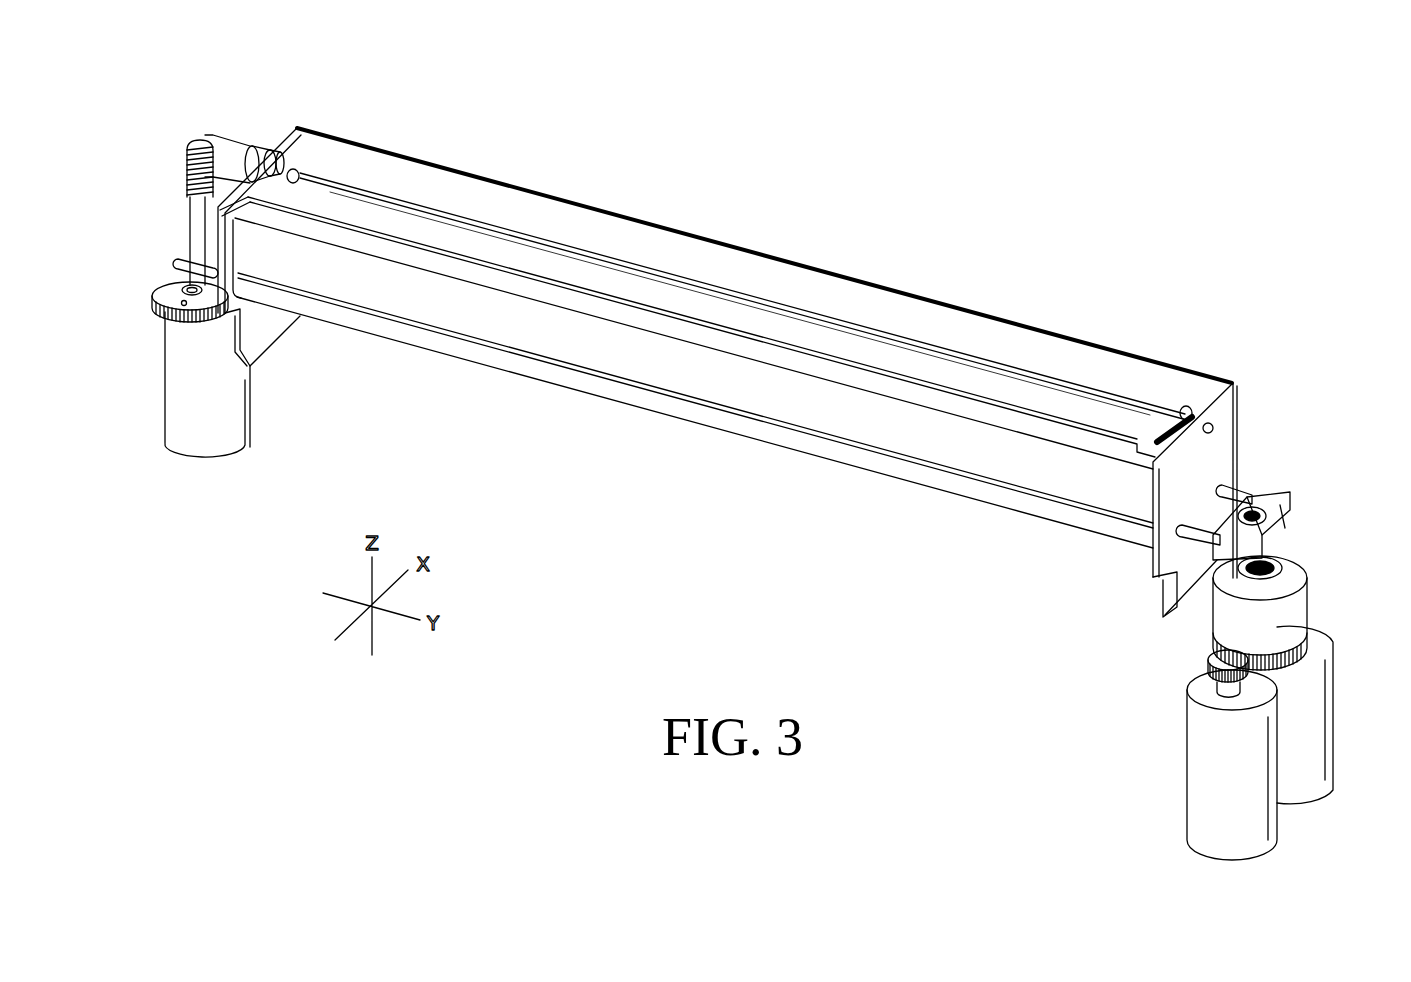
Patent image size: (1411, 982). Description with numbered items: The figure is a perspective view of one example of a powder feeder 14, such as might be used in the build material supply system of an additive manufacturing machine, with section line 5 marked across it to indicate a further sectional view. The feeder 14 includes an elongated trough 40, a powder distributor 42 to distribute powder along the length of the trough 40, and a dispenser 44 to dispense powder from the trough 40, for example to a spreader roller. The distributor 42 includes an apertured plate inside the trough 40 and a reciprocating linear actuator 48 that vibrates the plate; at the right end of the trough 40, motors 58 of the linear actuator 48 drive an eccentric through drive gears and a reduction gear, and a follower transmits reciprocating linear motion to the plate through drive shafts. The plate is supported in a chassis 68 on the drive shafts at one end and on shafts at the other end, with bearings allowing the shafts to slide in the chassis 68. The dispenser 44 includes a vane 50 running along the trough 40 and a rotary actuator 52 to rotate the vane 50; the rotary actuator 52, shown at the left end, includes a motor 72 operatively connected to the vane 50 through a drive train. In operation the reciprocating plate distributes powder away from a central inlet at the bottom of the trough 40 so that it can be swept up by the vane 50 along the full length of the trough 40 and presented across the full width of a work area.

The feeder 14 is at (1216, 333).
The trough 40 is at (977, 488).
The powder distributor 42 is at (1300, 418).
The dispenser 44 is at (263, 133).
The reciprocating linear actuator 48 is at (1307, 532).
The vane 50 is at (368, 213).
The rotary actuator 52 is at (145, 251).
The motors 58 is at (1300, 793).
The chassis 68 is at (1157, 578).
The motor 72 is at (235, 441).
The section line 5- 5 is at (997, 316).